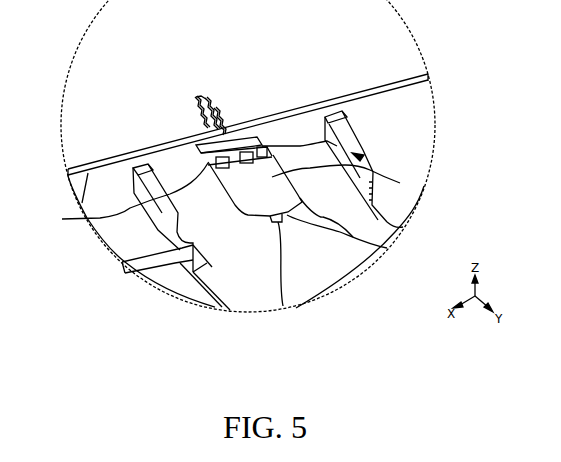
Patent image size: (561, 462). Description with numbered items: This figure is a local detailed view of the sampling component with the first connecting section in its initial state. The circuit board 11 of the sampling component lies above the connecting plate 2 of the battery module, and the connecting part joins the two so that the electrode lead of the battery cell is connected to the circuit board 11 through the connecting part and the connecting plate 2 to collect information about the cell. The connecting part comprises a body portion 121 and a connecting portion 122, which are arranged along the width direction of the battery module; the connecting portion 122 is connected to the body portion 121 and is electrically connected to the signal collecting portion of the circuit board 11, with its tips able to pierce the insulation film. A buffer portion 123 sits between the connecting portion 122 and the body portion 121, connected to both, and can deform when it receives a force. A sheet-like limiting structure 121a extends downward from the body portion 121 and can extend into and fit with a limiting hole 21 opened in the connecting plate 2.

The connecting plate 2 is at (325, 282).
The circuit board 11 is at (409, 56).
The limiting hole 21 is at (387, 248).
The body portion 121 is at (363, 150).
The limiting structure 121a is at (304, 306).
The connecting portion 122 is at (192, 98).
The buffer portion 123 is at (100, 218).